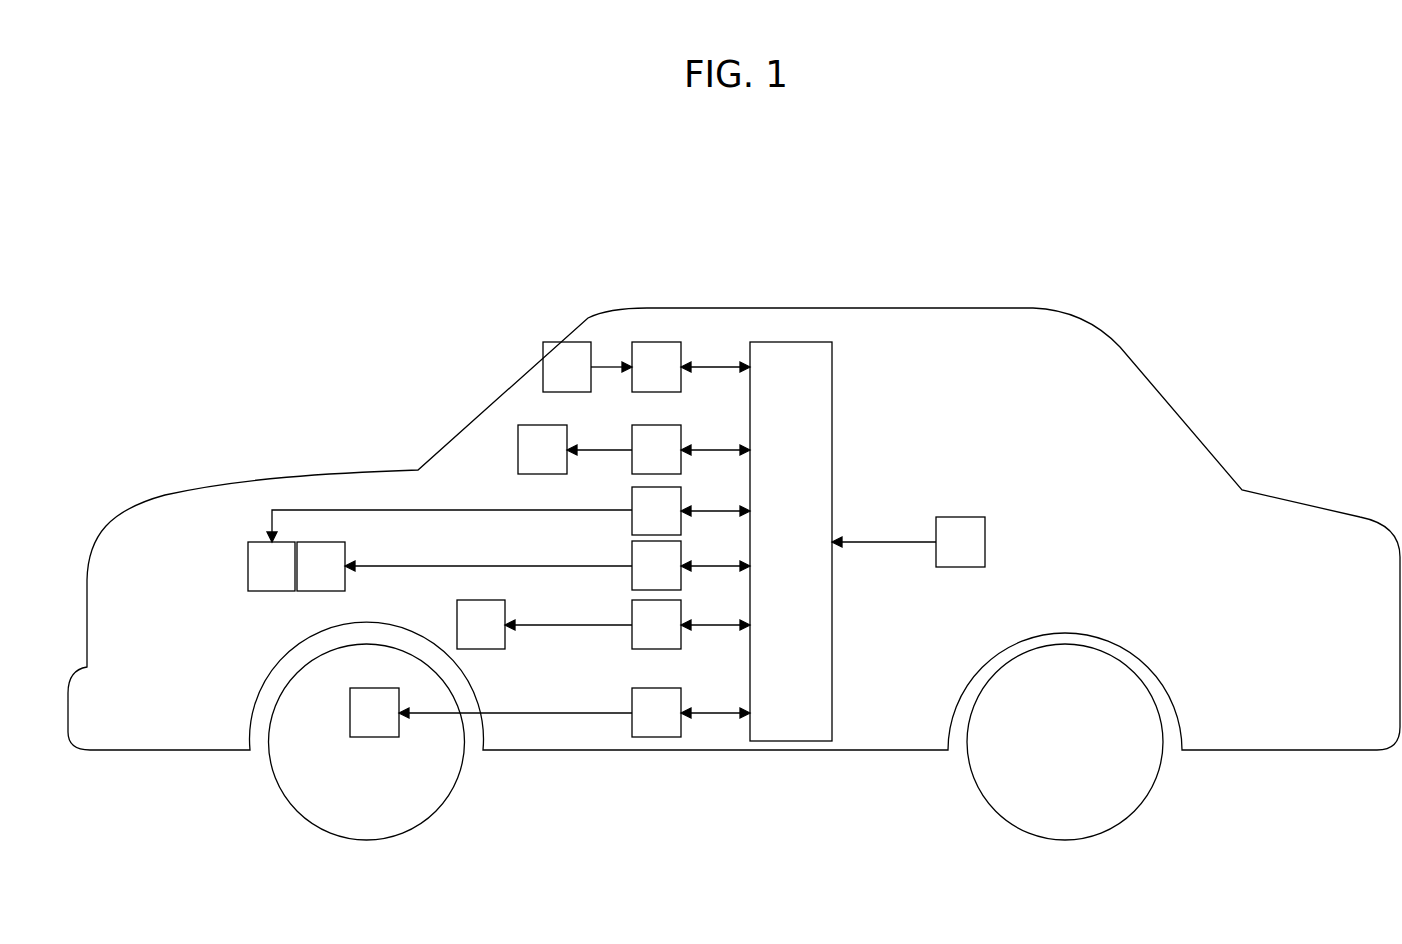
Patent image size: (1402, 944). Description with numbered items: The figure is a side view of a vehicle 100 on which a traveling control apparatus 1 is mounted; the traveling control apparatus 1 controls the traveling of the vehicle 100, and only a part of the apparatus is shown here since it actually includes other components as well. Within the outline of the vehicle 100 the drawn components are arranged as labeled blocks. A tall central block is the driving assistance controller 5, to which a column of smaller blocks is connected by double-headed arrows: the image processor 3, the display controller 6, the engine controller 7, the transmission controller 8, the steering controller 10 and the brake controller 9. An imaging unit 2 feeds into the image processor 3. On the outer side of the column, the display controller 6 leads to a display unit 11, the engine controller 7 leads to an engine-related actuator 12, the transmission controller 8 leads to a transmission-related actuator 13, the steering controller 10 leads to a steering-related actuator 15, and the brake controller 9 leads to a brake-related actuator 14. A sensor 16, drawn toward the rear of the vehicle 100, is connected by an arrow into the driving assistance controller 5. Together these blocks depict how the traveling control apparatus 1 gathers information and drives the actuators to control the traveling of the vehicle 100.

The vehicle 100 is at (736, 229).
The traveling control apparatus 1 is at (465, 372).
The imaging unit 2 is at (574, 381).
The image processor 3 is at (663, 381).
The driving assistance controller 5 is at (834, 348).
The display controller 6 is at (663, 463).
The engine controller 7 is at (663, 525).
The transmission controller 8 is at (663, 579).
The brake controller 9 is at (663, 726).
The steering controller 10 is at (668, 638).
The display unit 11 is at (554, 463).
The engine-related actuator 12 is at (283, 580).
The transmission-related actuator 13 is at (333, 580).
The brake-related actuator 14 is at (385, 726).
The steering-related actuator 15 is at (492, 638).
The sensor 16 is at (972, 555).